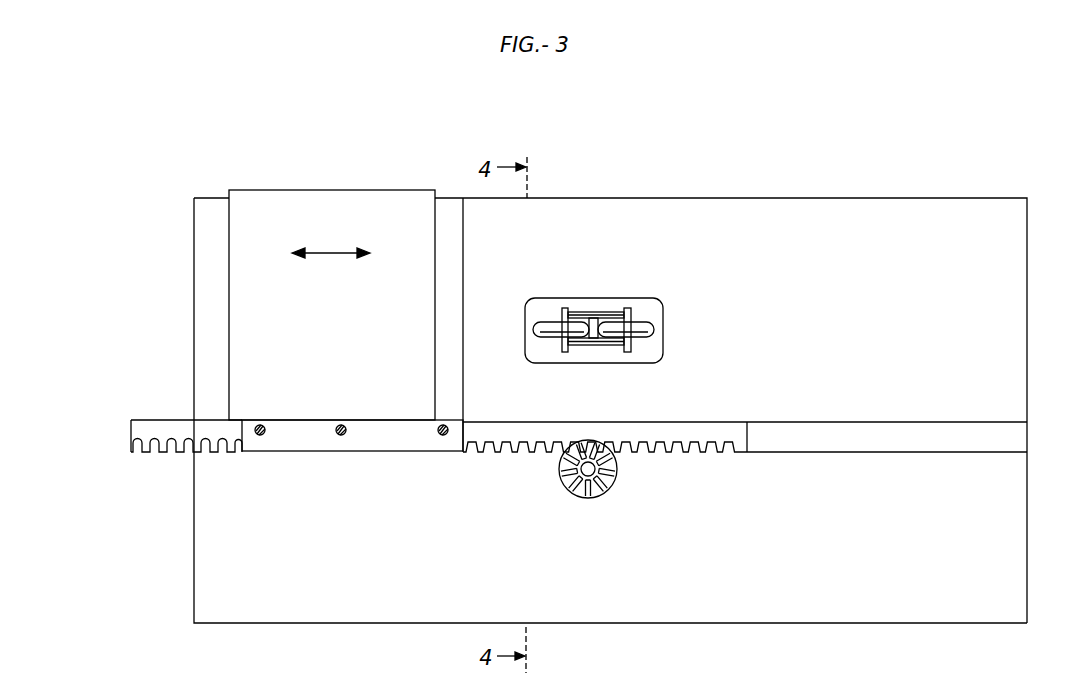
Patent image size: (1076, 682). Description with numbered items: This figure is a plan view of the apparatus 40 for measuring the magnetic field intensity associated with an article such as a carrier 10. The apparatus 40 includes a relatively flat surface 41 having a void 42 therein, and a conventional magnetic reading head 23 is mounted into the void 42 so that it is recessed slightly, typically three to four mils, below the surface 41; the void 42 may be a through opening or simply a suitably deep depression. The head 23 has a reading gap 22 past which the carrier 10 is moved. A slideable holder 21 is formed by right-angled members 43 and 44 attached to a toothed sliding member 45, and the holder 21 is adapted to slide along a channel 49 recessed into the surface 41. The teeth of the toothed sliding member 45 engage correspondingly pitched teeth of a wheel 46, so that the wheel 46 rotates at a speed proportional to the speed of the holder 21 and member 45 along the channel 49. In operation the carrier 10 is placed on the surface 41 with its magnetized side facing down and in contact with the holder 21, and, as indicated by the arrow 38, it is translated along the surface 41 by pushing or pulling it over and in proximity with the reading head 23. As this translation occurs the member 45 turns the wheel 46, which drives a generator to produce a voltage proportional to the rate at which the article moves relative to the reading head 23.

The carrier 10 is at (282, 186).
The slideable holder 21 is at (398, 457).
The reading gap 22 is at (594, 320).
The magnetic reading head 23 is at (549, 322).
The arrow 38 is at (343, 252).
The apparatus 40 is at (559, 186).
The flat surface 41 is at (777, 225).
The void 42 is at (648, 310).
The right-angled member 43 is at (465, 397).
The right-angled member 44 is at (327, 452).
The toothed sliding member 45 is at (705, 432).
The wheel 46 is at (607, 488).
The channel 49 is at (997, 443).